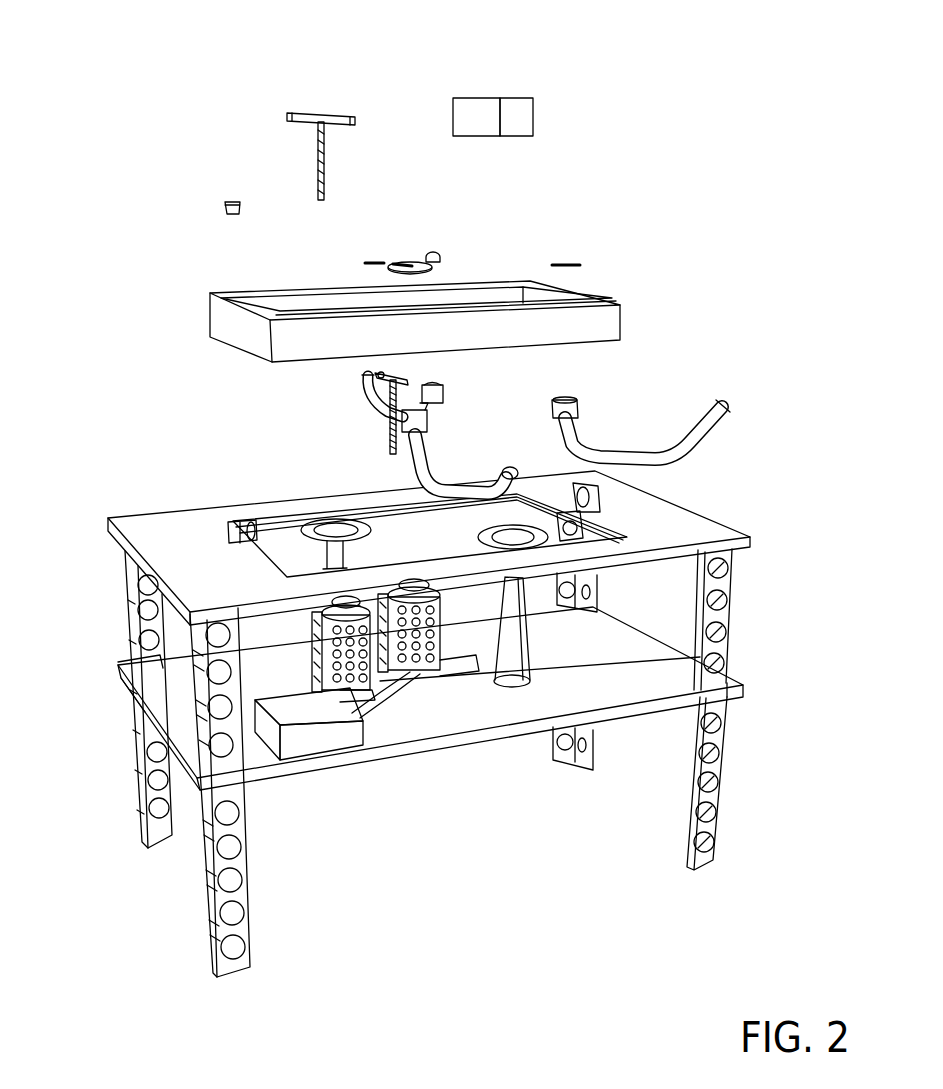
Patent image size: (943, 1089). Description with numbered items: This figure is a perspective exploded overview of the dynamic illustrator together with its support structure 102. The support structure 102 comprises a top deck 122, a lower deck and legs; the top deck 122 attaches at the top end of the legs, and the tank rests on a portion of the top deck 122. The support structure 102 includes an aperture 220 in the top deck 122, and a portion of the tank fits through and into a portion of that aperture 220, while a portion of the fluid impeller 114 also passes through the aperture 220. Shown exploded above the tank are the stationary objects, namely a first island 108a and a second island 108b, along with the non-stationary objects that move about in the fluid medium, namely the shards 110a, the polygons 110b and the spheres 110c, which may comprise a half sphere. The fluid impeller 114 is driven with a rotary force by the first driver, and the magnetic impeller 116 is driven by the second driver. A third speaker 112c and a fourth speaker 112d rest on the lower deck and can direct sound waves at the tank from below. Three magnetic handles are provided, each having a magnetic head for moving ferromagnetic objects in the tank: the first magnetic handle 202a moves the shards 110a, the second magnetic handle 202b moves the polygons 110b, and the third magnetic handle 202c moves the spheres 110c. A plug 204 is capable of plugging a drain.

The support structure 102 is at (750, 538).
The first island 108a is at (520, 100).
The second island 108b is at (478, 98).
The shards 110a is at (410, 263).
The polygons 110b is at (421, 266).
The spheres 110c is at (433, 254).
The third speaker 112c is at (292, 568).
The fourth speaker 112d is at (516, 628).
The fluid impeller 114 is at (320, 172).
The magnetic impeller 116 is at (389, 418).
The top deck 122 is at (690, 517).
The first magnetic handle 202a is at (675, 440).
The second magnetic handle 202b is at (430, 478).
The third magnetic handle 202c is at (432, 407).
The plug 204 is at (226, 215).
The aperture 220 is at (233, 537).